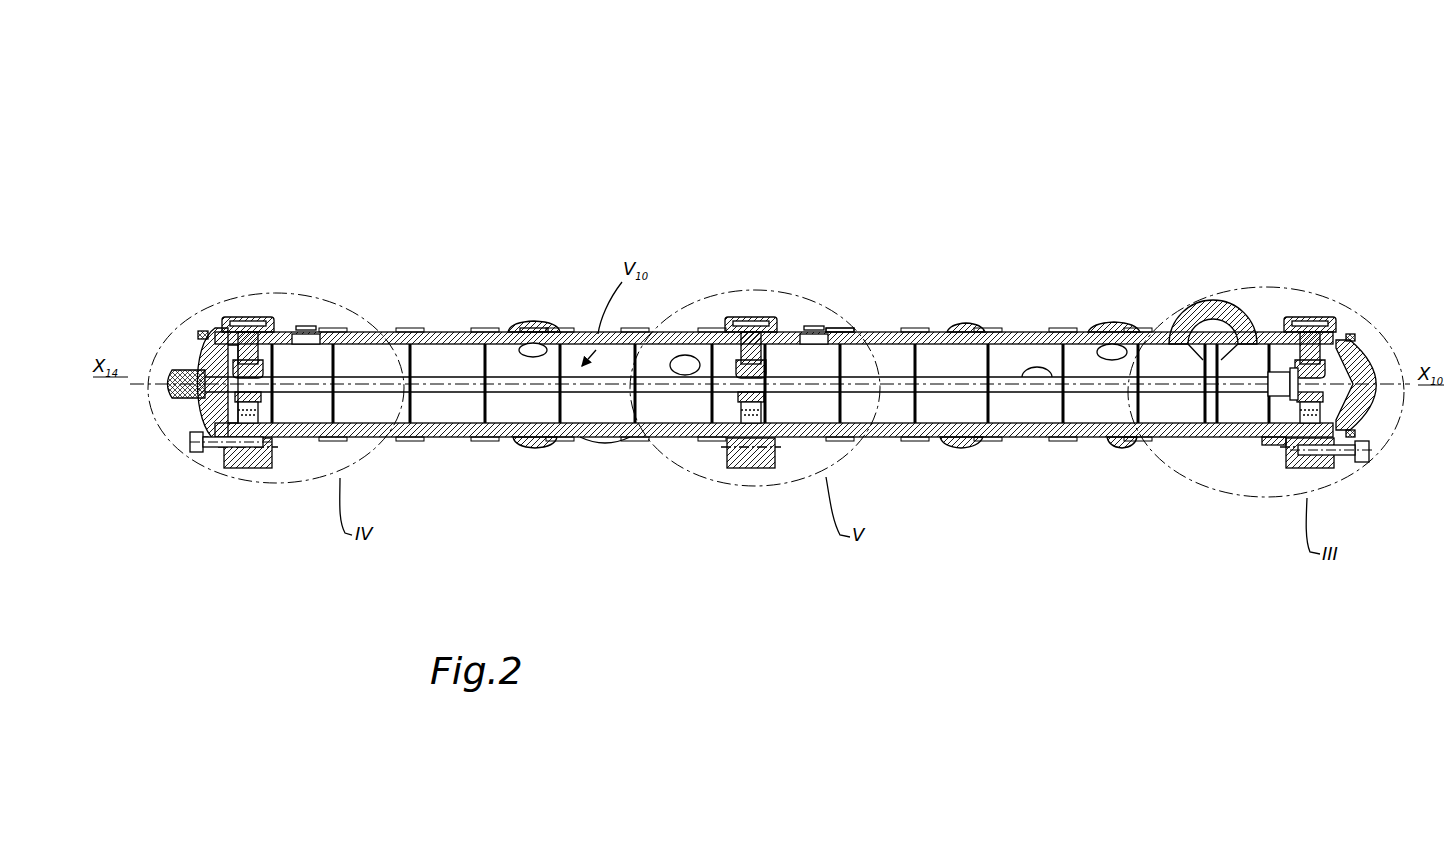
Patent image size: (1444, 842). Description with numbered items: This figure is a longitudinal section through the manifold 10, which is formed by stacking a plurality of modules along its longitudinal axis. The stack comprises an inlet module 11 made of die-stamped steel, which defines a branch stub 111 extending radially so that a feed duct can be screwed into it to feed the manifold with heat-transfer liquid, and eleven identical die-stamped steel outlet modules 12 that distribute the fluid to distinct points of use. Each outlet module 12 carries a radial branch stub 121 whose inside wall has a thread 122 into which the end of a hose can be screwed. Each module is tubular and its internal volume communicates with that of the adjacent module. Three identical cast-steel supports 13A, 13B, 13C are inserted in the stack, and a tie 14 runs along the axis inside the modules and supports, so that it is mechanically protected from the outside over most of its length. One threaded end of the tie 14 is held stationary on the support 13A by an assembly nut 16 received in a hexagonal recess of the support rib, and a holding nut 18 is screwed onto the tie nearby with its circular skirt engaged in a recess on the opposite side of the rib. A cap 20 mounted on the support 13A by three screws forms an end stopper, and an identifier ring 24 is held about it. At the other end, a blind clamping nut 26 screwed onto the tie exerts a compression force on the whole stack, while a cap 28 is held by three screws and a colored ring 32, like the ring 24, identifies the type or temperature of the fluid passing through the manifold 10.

The manifold 10 is at (1080, 145).
The inlet module 11 is at (1218, 440).
The outlet module 12 is at (393, 332).
The support 13A is at (1300, 326).
The support 13B is at (240, 318).
The support 13C is at (738, 328).
The tie 14 is at (955, 380).
The assembly nut 16 is at (1362, 344).
The holding nut 18 is at (1267, 445).
The cap 20 is at (1368, 428).
The identifier ring 24 is at (1352, 334).
The blind clamping nut 26 is at (175, 415).
The cap 28 is at (170, 342).
The colored ring 32 is at (205, 328).
The branch stub 111 is at (1222, 298).
The branch stub 121 is at (537, 324).
The thread 122 is at (306, 330).